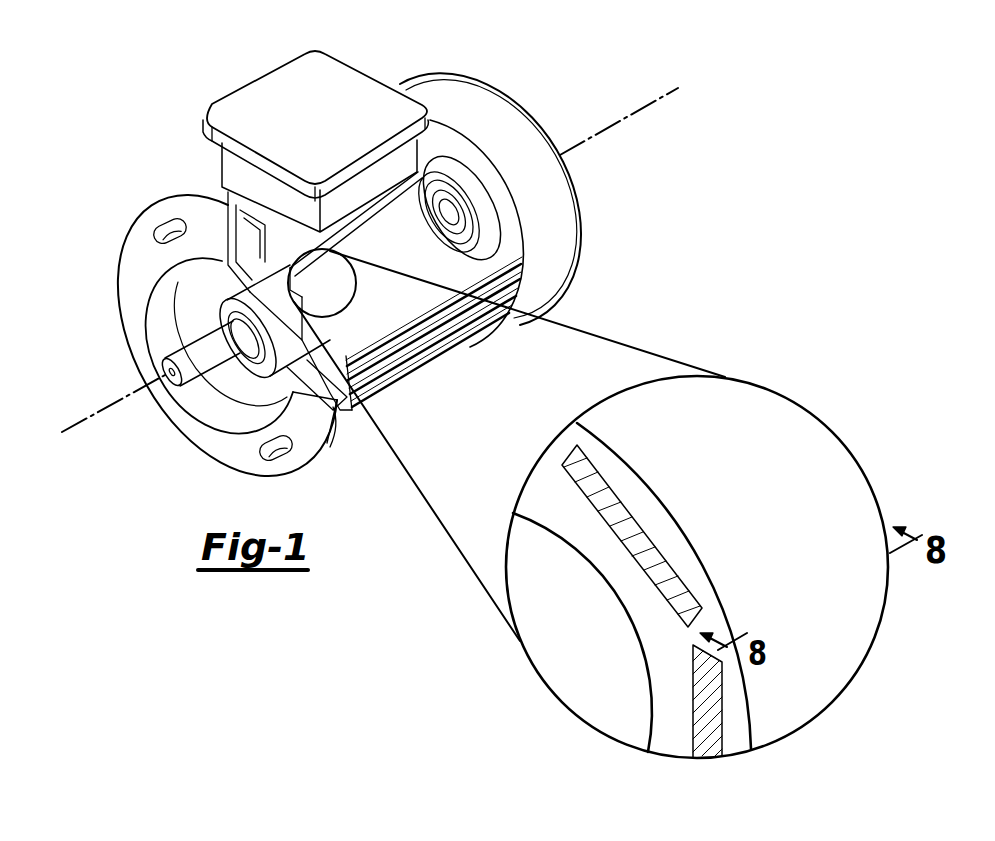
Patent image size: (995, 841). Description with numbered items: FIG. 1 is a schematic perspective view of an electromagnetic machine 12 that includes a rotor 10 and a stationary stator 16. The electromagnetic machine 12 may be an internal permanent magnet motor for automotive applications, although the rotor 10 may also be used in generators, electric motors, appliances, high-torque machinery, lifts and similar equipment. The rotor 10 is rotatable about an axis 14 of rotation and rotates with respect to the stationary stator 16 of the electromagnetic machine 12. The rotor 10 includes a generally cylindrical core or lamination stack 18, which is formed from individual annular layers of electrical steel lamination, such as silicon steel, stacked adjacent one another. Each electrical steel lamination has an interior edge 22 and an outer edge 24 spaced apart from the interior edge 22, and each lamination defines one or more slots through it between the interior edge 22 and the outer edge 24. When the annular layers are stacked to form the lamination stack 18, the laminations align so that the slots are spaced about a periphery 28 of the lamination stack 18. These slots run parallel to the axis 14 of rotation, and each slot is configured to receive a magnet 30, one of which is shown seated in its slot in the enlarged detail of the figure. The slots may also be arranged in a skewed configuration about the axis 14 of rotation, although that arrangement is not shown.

The rotor 10 is at (778, 372).
The electromagnetic machine 12 is at (349, 263).
The axis of rotation 14 is at (645, 108).
The stator 16 is at (378, 320).
The lamination stack 18 is at (545, 493).
The interior edge 22 is at (636, 625).
The outer edge 24 is at (697, 553).
The periphery 28 is at (733, 740).
The magnet 30 is at (625, 533).